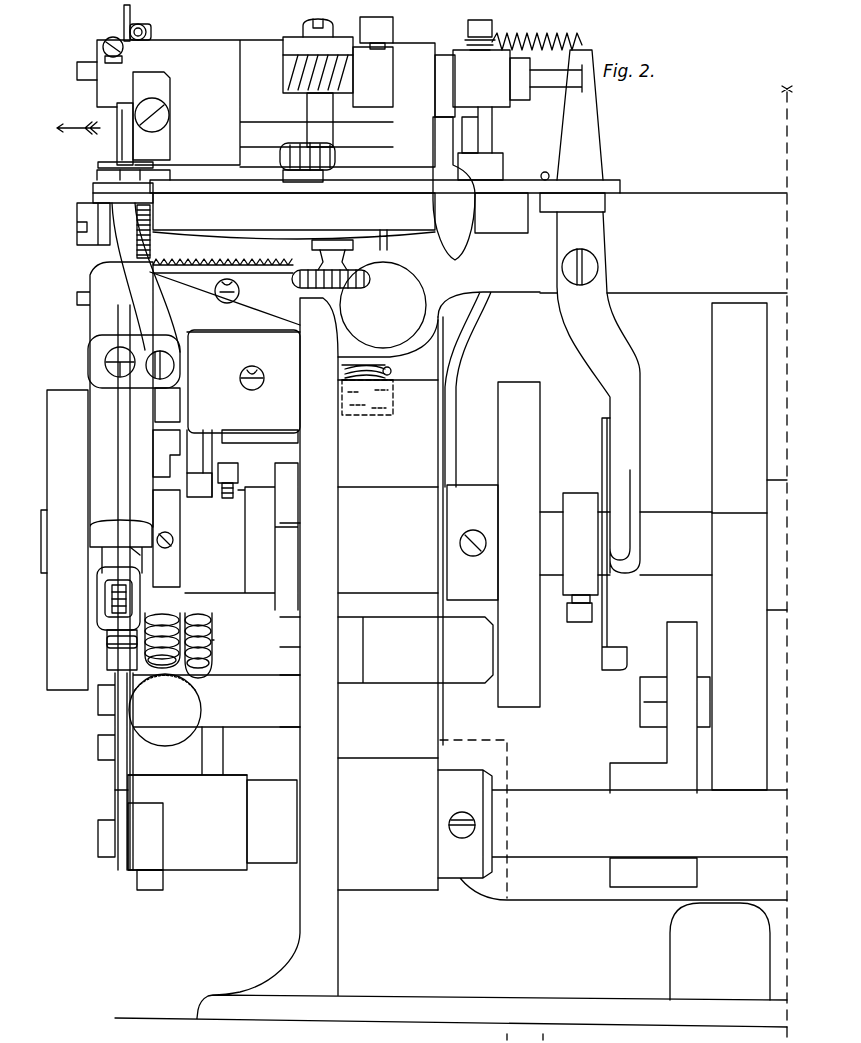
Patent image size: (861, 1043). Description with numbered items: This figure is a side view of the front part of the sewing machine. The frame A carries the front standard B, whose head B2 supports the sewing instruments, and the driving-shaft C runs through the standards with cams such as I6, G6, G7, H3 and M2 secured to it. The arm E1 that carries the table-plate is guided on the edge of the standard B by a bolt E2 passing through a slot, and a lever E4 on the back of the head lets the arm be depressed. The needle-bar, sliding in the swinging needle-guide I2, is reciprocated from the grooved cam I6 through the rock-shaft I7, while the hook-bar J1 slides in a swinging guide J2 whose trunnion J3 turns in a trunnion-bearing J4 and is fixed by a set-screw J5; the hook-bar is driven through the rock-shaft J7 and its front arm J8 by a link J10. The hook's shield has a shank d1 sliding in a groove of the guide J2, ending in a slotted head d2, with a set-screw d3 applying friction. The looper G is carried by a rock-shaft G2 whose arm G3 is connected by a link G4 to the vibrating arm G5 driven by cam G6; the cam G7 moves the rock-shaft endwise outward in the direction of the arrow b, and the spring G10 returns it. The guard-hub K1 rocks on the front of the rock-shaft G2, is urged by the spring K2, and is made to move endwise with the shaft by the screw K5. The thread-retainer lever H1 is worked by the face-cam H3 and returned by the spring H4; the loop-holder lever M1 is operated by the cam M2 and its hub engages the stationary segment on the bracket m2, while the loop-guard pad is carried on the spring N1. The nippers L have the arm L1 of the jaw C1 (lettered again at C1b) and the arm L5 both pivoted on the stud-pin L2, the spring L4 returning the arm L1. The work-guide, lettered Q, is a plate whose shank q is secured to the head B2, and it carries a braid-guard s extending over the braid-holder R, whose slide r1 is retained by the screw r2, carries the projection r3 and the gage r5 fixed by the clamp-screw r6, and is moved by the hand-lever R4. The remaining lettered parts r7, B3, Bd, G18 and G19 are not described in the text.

The head of front standard B2 is at (266, 92).
The screw K5 is at (111, 34).
The spring K2 is at (146, 33).
The guard-hub K1 is at (96, 79).
The shank of guide plate q is at (151, 116).
The block Q is at (151, 149).
The jaw of nippers C1 is at (120, 134).
The arrow b is at (78, 118).
The braid-guard s is at (122, 157).
The hand-lever R4 is at (468, 175).
The projection r3 is at (129, 174).
The gage r5 is at (145, 174).
The braid-holder R is at (123, 194).
The slide r1 is at (123, 194).
The arm E1 is at (470, 243).
The screw r2 is at (332, 252).
The clamp-screw r6 is at (303, 175).
The block r7 is at (540, 211).
The lever E4 is at (453, 188).
The spring G10 is at (305, 56).
The looper G is at (301, 119).
The looper rock-shaft G2 is at (445, 86).
The arm G3 is at (481, 63).
The rod G19 is at (537, 66).
The link G4 is at (489, 498).
The lever arm G18 is at (598, 311).
The cam G7 is at (614, 544).
The grooved cam I6 is at (749, 546).
The block C1b is at (626, 543).
The rock-shaft I7 is at (660, 754).
The cam G6 is at (522, 544).
The vibrating arm G5 is at (415, 650).
The front standard B is at (451, 662).
The frame A is at (512, 1001).
The block (dashed) Bd is at (367, 397).
The face-cam H3 is at (273, 471).
The bolt E2 is at (359, 305).
The lever M1 is at (93, 232).
The spring H4 is at (215, 254).
The spring N1 is at (146, 291).
The swinging guide J2 is at (115, 417).
The shield-shank d1 is at (121, 587).
The set-screw d3 is at (134, 361).
The bracket m2 is at (225, 302).
The trunnion J3 is at (167, 405).
The trunnion-bearing J4 is at (244, 386).
The set-screw J5 is at (252, 374).
The cam M2 is at (67, 540).
The driving-shaft C is at (42, 527).
The lever H1 is at (166, 453).
The block B3 is at (241, 520).
The needle-guide I2 is at (118, 616).
The slotted head d2 is at (117, 630).
The hook-bar J1 is at (133, 552).
The arm L5 is at (162, 631).
The arm L1 is at (198, 635).
The spring L4 is at (219, 636).
The reciprocating nippers L is at (199, 696).
The stud-pin L2 is at (192, 751).
The front arm J8 is at (212, 832).
The link J10 is at (116, 784).
The rock-shaft J7 is at (612, 835).